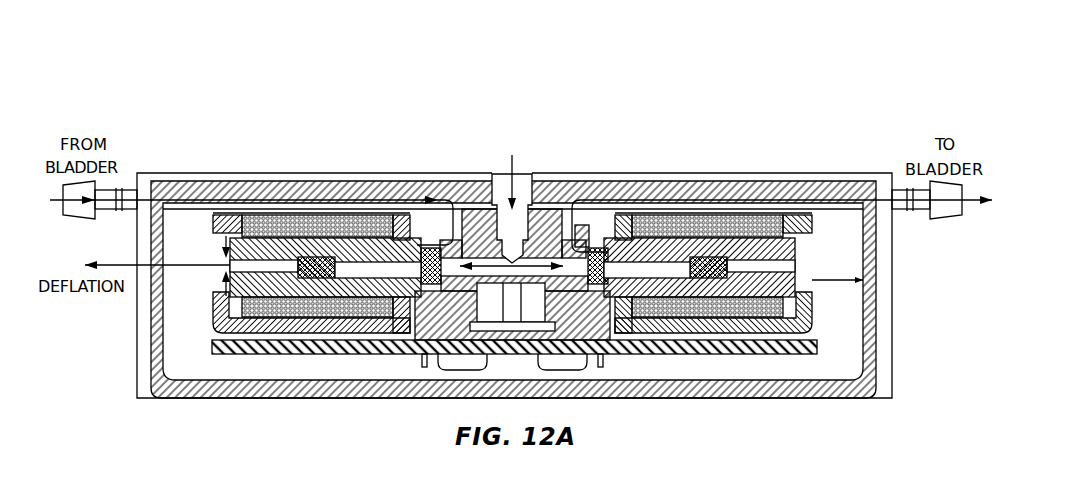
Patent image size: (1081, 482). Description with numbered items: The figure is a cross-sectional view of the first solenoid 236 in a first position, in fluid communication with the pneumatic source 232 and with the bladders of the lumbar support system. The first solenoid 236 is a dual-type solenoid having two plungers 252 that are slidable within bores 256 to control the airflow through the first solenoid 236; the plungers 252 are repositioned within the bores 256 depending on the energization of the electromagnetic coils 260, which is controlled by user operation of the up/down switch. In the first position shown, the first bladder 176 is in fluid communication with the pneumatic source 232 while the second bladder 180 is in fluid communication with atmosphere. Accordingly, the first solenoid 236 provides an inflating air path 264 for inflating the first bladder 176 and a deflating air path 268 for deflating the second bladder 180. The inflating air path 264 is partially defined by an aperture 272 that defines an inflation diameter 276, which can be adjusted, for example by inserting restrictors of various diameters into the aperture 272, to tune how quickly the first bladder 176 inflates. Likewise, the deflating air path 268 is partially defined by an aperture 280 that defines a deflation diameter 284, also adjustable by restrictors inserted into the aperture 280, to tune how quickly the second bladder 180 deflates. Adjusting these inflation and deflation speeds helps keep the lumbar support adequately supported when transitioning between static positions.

The first solenoid 236 is at (1008, 90).
The second bladder 180 is at (109, 186).
The first bladder 176 is at (955, 189).
The deflating air path 268 is at (258, 201).
The inflating air path 264 is at (740, 202).
The pneumatic source 232 is at (566, 160).
The aperture 272 is at (580, 254).
The inflation diameter 276 is at (586, 236).
The electromagnetic coils 260 is at (280, 310).
The bores 256 is at (350, 285).
The plungers 252 is at (378, 283).
The deflation diameter 284 is at (222, 240).
The aperture 280 is at (224, 290).